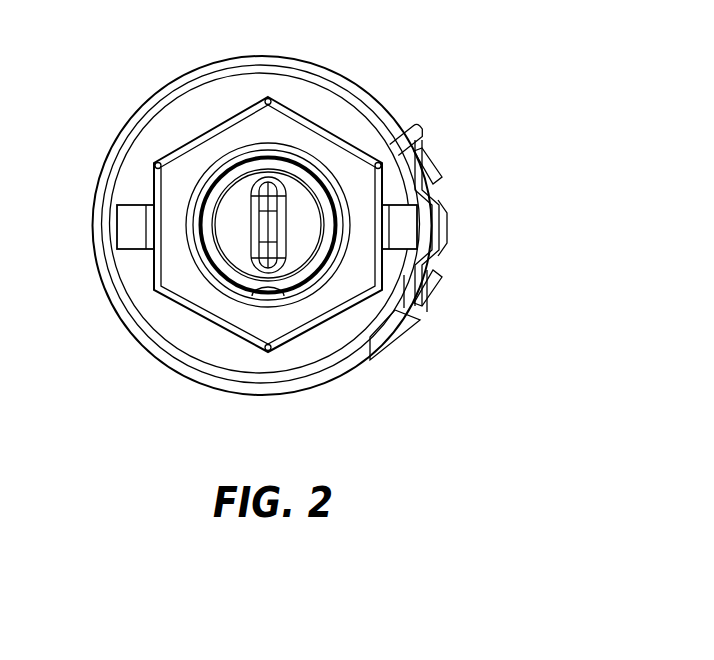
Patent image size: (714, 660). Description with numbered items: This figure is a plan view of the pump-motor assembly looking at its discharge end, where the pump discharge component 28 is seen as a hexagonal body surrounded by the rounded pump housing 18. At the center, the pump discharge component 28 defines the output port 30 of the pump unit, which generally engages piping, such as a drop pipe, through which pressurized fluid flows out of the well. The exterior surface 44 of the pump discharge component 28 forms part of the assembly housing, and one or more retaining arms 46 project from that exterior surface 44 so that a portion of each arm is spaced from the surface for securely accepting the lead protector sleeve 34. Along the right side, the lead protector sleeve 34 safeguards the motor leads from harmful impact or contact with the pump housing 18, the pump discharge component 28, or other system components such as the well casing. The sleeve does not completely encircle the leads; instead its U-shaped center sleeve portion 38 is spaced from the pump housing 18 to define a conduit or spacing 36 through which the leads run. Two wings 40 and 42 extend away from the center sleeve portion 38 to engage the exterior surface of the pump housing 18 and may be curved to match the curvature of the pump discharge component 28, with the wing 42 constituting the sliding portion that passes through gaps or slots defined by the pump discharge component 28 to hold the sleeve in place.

The pump housing 18 is at (152, 322).
The exterior surface 44 is at (313, 88).
The pump discharge component 28 is at (307, 312).
The output port 30 is at (262, 293).
The conduit or spacing 36 is at (464, 216).
The lead protector sleeve 34 is at (448, 252).
The center sleeve portion 38 is at (448, 218).
The wing 42 is at (425, 170).
The wing 40 is at (430, 288).
The retaining arm 46 is at (400, 124).